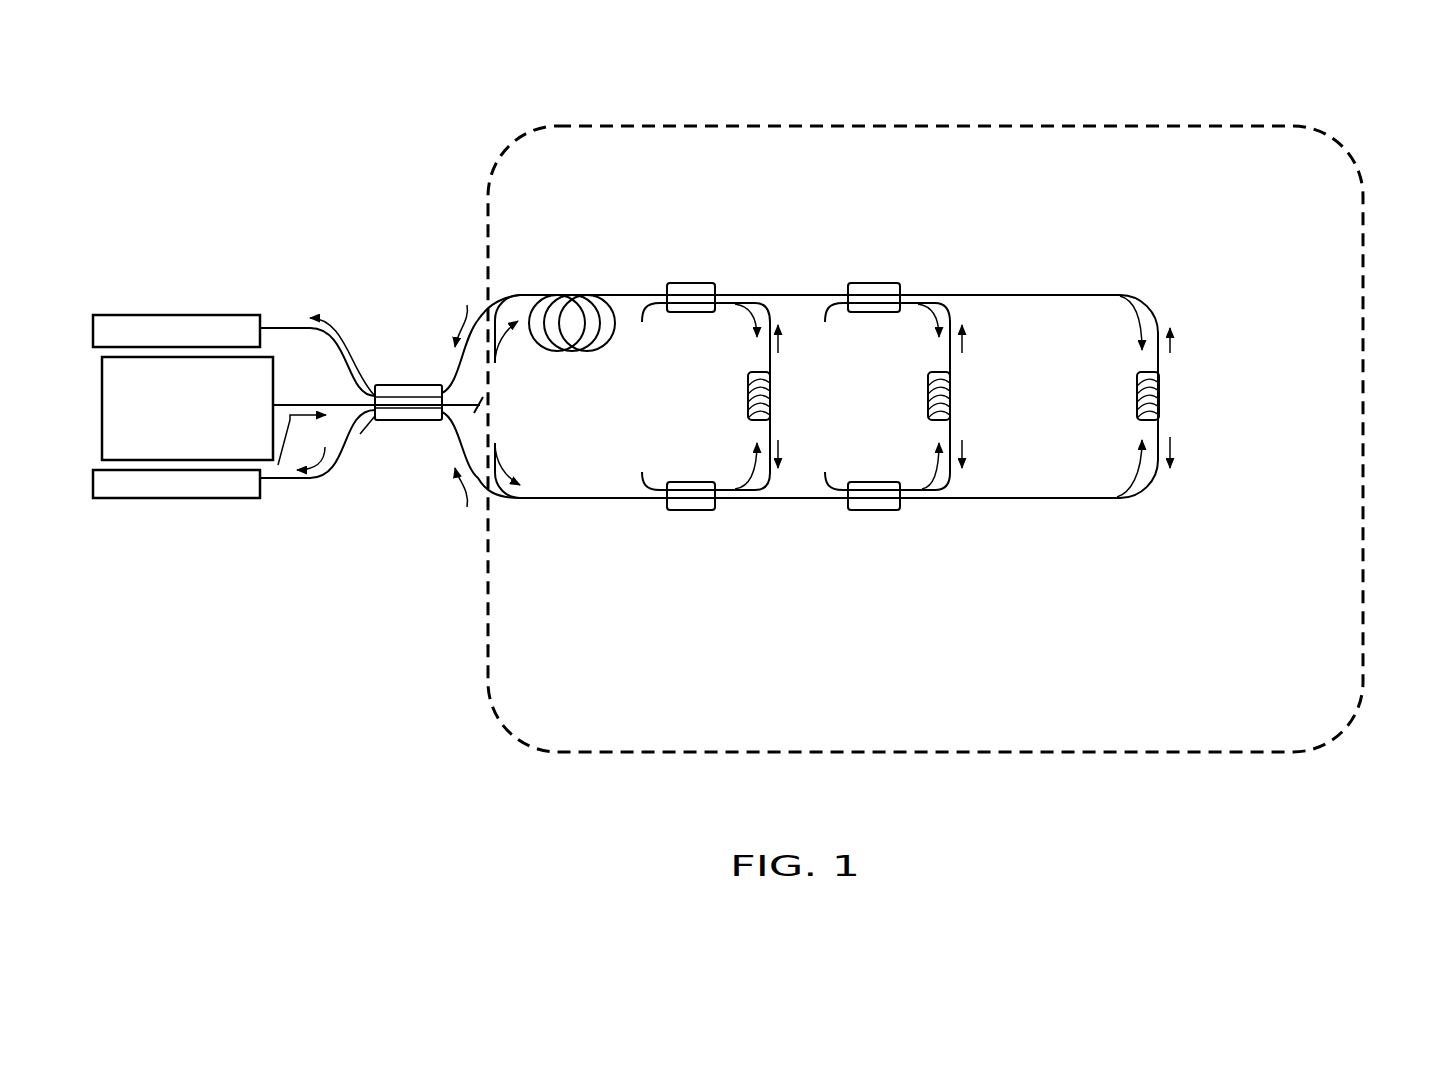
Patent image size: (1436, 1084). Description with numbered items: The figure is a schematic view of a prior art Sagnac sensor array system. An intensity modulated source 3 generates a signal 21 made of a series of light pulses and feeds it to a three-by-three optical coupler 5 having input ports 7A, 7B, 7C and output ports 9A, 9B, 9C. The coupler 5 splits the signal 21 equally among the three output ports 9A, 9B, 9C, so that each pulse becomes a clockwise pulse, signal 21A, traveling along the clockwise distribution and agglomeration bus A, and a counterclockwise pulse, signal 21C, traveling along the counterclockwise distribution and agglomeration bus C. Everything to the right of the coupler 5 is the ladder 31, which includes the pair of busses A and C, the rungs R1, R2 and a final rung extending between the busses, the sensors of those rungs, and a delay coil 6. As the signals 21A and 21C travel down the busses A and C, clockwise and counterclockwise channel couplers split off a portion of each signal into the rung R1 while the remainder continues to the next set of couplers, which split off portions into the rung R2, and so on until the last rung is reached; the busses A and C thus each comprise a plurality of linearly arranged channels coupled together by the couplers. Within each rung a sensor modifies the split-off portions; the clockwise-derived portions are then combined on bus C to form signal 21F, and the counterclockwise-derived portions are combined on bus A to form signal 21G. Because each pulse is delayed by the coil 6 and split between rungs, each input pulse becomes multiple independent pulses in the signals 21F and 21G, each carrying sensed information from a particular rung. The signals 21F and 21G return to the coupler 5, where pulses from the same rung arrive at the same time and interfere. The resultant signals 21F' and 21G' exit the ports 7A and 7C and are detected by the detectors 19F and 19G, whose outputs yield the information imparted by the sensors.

The source 3 is at (102, 412).
The detector 19G is at (190, 315).
The detector 19F is at (187, 500).
The coupler 5 is at (385, 386).
The input port 7A is at (376, 396).
The input port 7B is at (372, 414).
The input port 7C is at (374, 412).
The output port 9A is at (443, 392).
The output port 9B is at (446, 422).
The output port 9C is at (444, 418).
The signal 21 is at (375, 414).
The resultant signal 21F' is at (255, 518).
The resultant signal 21G' is at (349, 316).
The signal 21G is at (454, 271).
The signal 21F is at (428, 552).
The clockwise signal 21A is at (498, 325).
The counterclockwise signal 21C is at (532, 485).
The delay coil 6 is at (618, 316).
The rung R1 is at (769, 487).
The rung R2 is at (958, 488).
The clockwise distribution and agglomeration bus A is at (1197, 294).
The counterclockwise distribution and agglomeration bus C is at (1197, 480).
The ladder 31 is at (1366, 578).